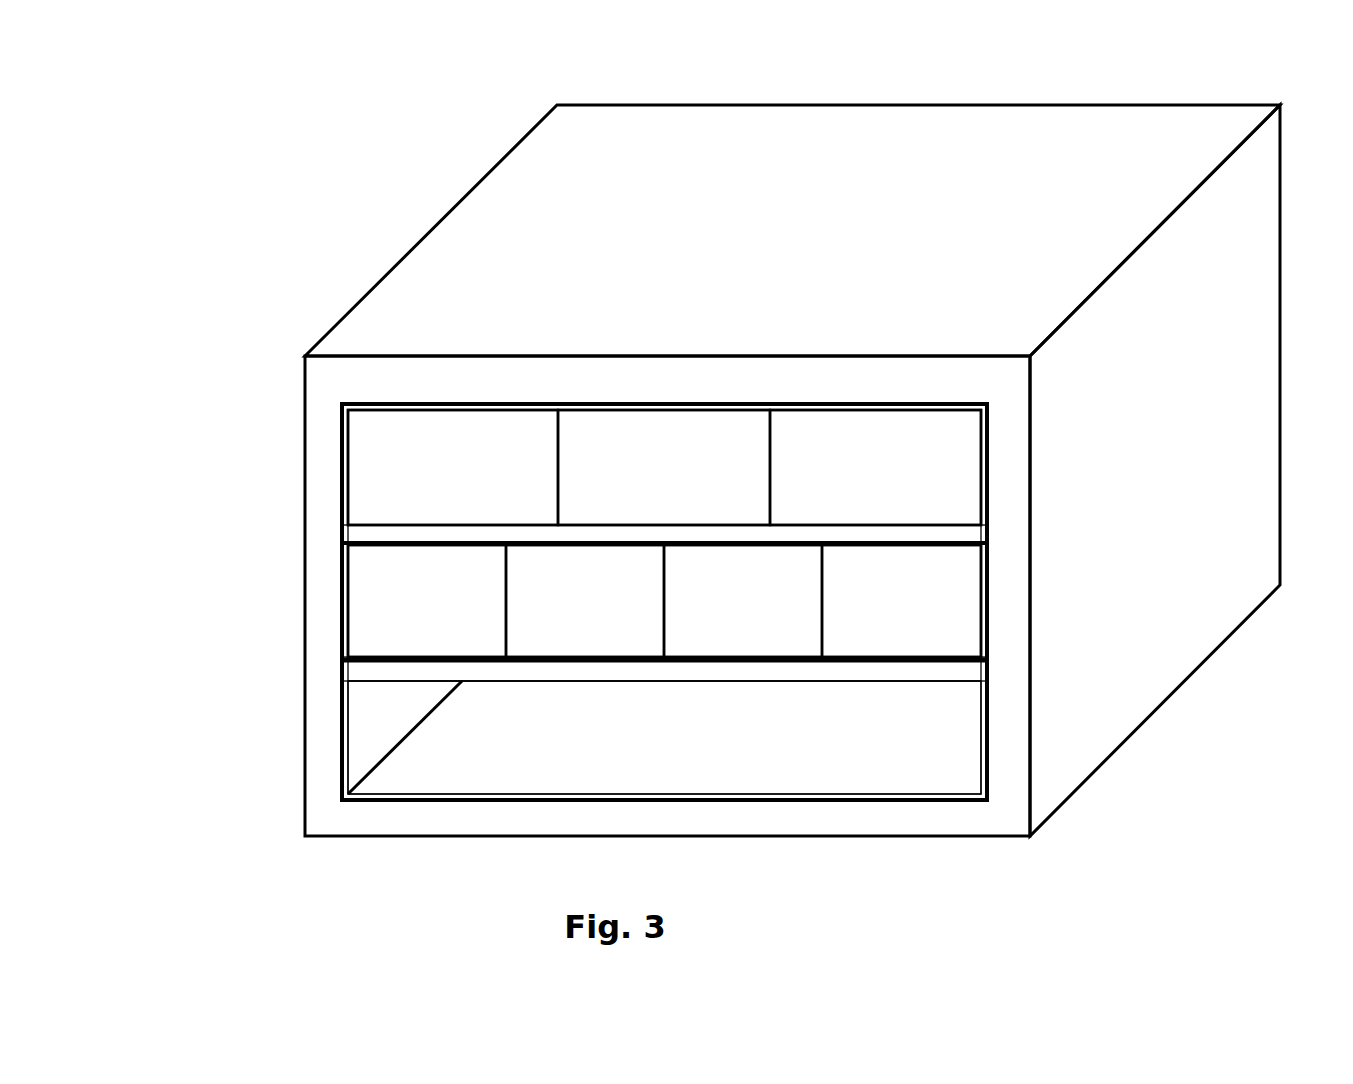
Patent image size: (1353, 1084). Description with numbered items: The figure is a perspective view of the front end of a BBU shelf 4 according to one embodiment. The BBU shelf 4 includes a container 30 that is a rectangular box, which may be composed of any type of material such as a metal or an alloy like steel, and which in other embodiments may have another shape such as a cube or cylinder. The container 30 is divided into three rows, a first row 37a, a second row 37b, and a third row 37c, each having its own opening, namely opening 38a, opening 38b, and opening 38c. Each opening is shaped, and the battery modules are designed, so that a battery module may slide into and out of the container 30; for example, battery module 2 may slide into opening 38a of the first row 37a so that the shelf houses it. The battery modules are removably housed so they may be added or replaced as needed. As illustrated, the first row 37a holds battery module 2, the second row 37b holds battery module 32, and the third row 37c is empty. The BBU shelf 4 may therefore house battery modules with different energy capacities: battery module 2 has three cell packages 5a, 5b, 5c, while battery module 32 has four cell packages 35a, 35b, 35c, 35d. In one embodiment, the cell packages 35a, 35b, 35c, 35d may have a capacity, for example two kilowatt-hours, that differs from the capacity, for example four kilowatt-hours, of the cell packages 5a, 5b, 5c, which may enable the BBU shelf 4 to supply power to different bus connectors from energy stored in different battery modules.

The BBU shelf 4 is at (716, 444).
The container 30 is at (792, 470).
The battery module 2 is at (987, 452).
The battery module 32 is at (987, 601).
The first row 37a is at (550, 431).
The second row 37b is at (550, 572).
The third row 37c is at (202, 727).
The opening 38a is at (357, 472).
The opening 38b is at (357, 600).
The opening 38c is at (357, 745).
The cell package 5a is at (453, 467).
The cell package 5b is at (664, 467).
The cell package 5c is at (875, 467).
The cell package 35a is at (427, 601).
The cell package 35b is at (585, 601).
The cell package 35c is at (743, 601).
The cell package 35d is at (901, 601).